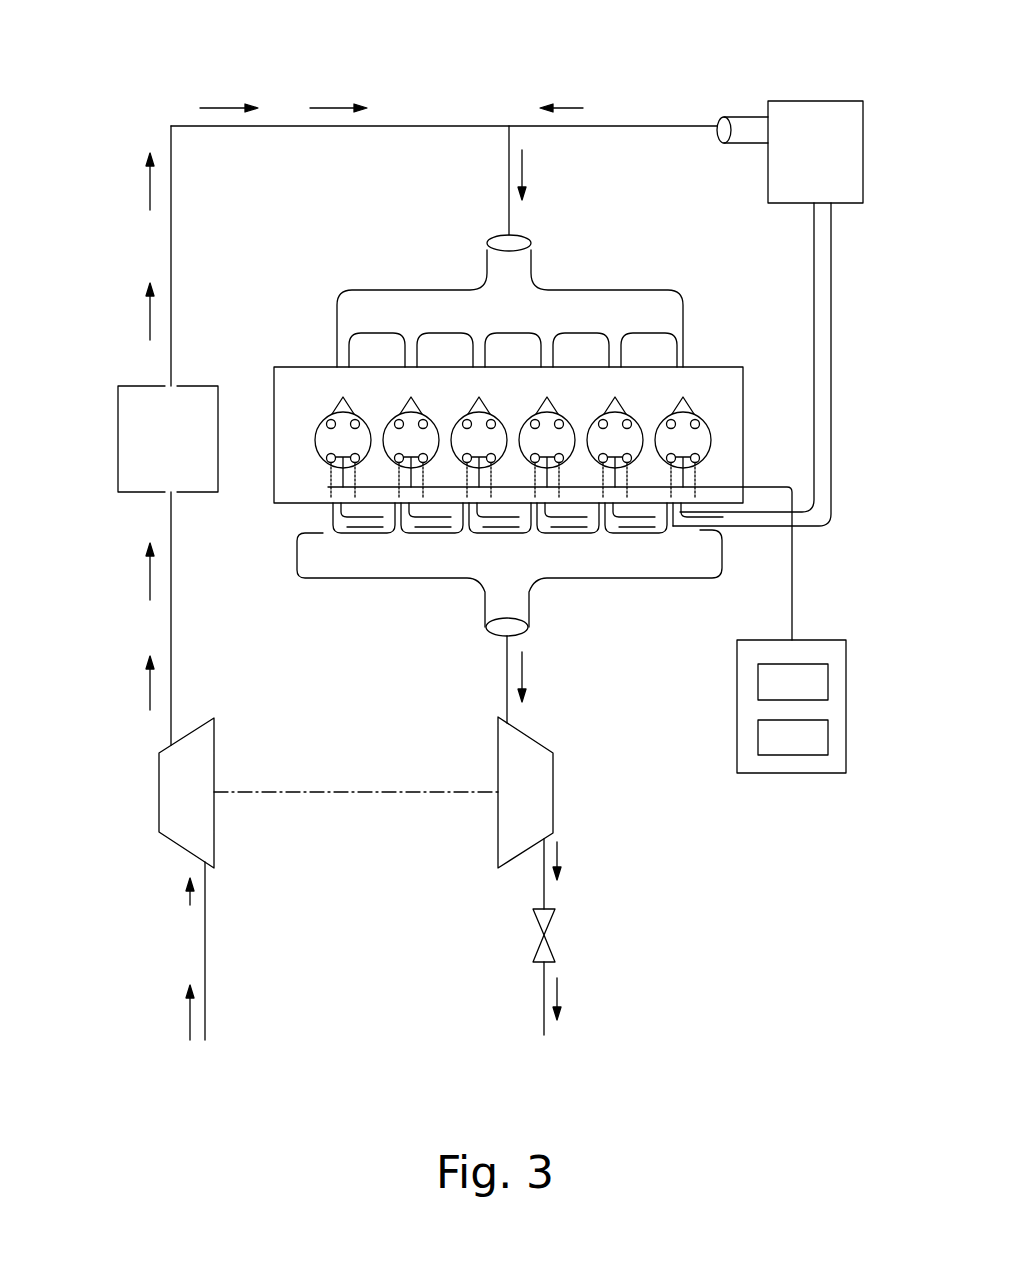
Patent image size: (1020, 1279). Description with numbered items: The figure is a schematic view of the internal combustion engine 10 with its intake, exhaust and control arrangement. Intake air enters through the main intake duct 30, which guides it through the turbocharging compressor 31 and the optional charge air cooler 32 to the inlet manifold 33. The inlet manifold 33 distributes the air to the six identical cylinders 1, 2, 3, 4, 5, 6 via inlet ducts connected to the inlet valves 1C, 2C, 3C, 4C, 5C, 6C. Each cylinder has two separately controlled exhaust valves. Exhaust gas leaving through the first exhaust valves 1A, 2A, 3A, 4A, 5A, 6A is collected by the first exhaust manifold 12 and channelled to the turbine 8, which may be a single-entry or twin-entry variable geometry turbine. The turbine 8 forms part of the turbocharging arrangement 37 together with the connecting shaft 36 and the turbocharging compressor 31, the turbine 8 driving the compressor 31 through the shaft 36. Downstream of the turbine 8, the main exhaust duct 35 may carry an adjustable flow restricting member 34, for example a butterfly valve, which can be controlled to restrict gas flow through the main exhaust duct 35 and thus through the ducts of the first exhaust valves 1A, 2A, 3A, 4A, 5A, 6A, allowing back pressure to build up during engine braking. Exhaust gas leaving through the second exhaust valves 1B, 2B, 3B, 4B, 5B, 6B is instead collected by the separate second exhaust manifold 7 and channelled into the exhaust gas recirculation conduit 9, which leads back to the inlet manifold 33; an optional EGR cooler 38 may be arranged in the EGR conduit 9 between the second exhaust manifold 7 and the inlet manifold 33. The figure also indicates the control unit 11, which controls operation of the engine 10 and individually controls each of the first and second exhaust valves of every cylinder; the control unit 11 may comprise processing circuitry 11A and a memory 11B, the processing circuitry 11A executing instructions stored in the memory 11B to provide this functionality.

The internal combustion engine 10 is at (176, 72).
The main intake duct 30 is at (383, 126).
The EGR cooler 38 is at (818, 101).
The EGR conduit 9 is at (756, 117).
The inlet manifold 33 is at (686, 326).
The charge air cooler 32 is at (118, 412).
The cylinder 1 is at (322, 426).
The first exhaust valve 1A is at (331, 470).
The second exhaust valve 1B is at (362, 445).
The inlet valve 1C is at (343, 394).
The cylinder 2 is at (403, 455).
The first exhaust valve 2A is at (399, 465).
The second exhaust valve 2B is at (426, 455).
The inlet valve 2C is at (411, 394).
The cylinder 3 is at (471, 455).
The first exhaust valve 3A is at (467, 465).
The second exhaust valve 3B is at (494, 455).
The inlet valve 3C is at (479, 394).
The cylinder 4 is at (539, 455).
The first exhaust valve 4A is at (535, 465).
The second exhaust valve 4B is at (562, 455).
The inlet valve 4C is at (547, 394).
The cylinder 5 is at (607, 455).
The first exhaust valve 5A is at (603, 465).
The second exhaust valve 5B is at (630, 455).
The inlet valve 5C is at (615, 394).
The cylinder 6 is at (675, 455).
The first exhaust valve 6A is at (671, 465).
The second exhaust valve 6B is at (698, 455).
The inlet valve 6C is at (683, 394).
The second exhaust manifold 7 is at (735, 535).
The first exhaust manifold 12 is at (535, 617).
The control unit 11 is at (737, 715).
The processing circuitry 11A is at (793, 682).
The memory 11B is at (793, 737).
The turbocharging arrangement 37 is at (366, 914).
The turbocharging compressor 31 is at (158, 795).
The turbine 8 is at (553, 792).
The connecting shaft 36 is at (358, 795).
The adjustable flow restricting member 34 is at (556, 920).
The main exhaust duct 35 is at (540, 1004).